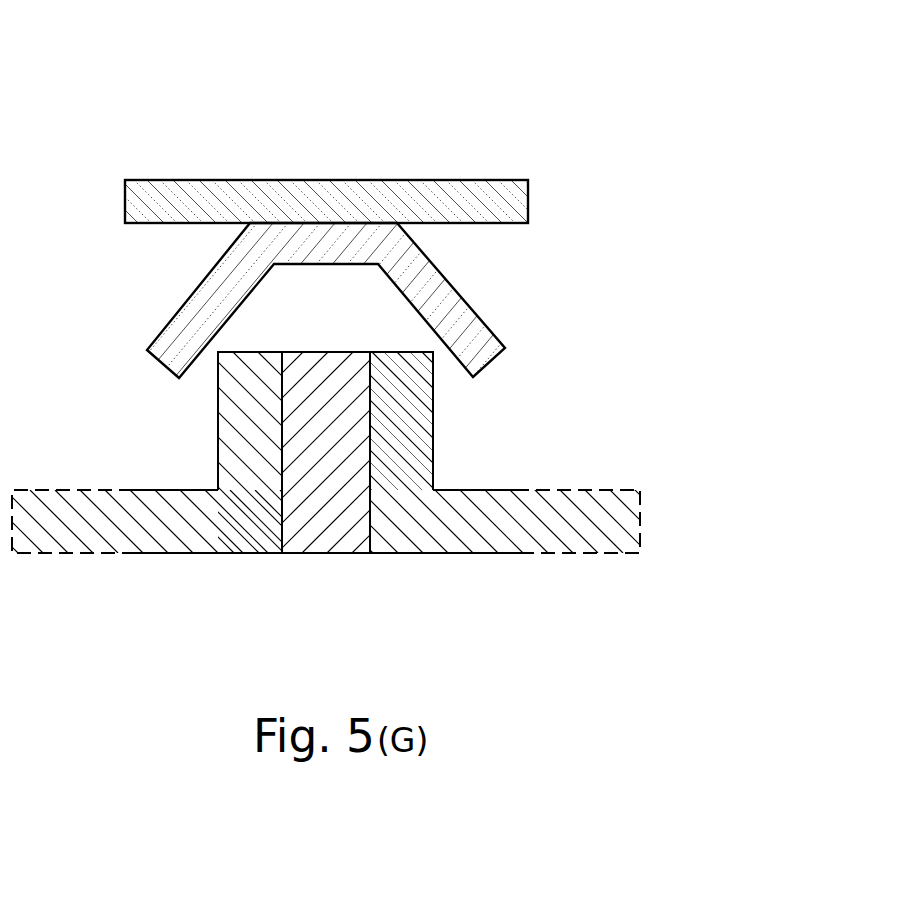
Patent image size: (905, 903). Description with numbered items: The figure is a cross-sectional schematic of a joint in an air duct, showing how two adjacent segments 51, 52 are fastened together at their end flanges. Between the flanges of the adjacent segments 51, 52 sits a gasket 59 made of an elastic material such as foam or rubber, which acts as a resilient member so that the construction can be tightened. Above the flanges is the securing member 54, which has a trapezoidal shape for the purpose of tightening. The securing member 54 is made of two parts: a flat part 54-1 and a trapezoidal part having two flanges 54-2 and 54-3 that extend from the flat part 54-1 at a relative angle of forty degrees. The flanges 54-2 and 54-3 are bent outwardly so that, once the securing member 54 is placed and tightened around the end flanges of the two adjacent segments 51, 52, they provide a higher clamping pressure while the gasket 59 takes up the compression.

The securing member 54 is at (325, 196).
The flat part 54-1 is at (178, 195).
The flange 54-2 is at (198, 305).
The flange 54-3 is at (447, 311).
The gasket 59 is at (355, 433).
The segment 51 is at (83, 607).
The segment 52 is at (566, 618).